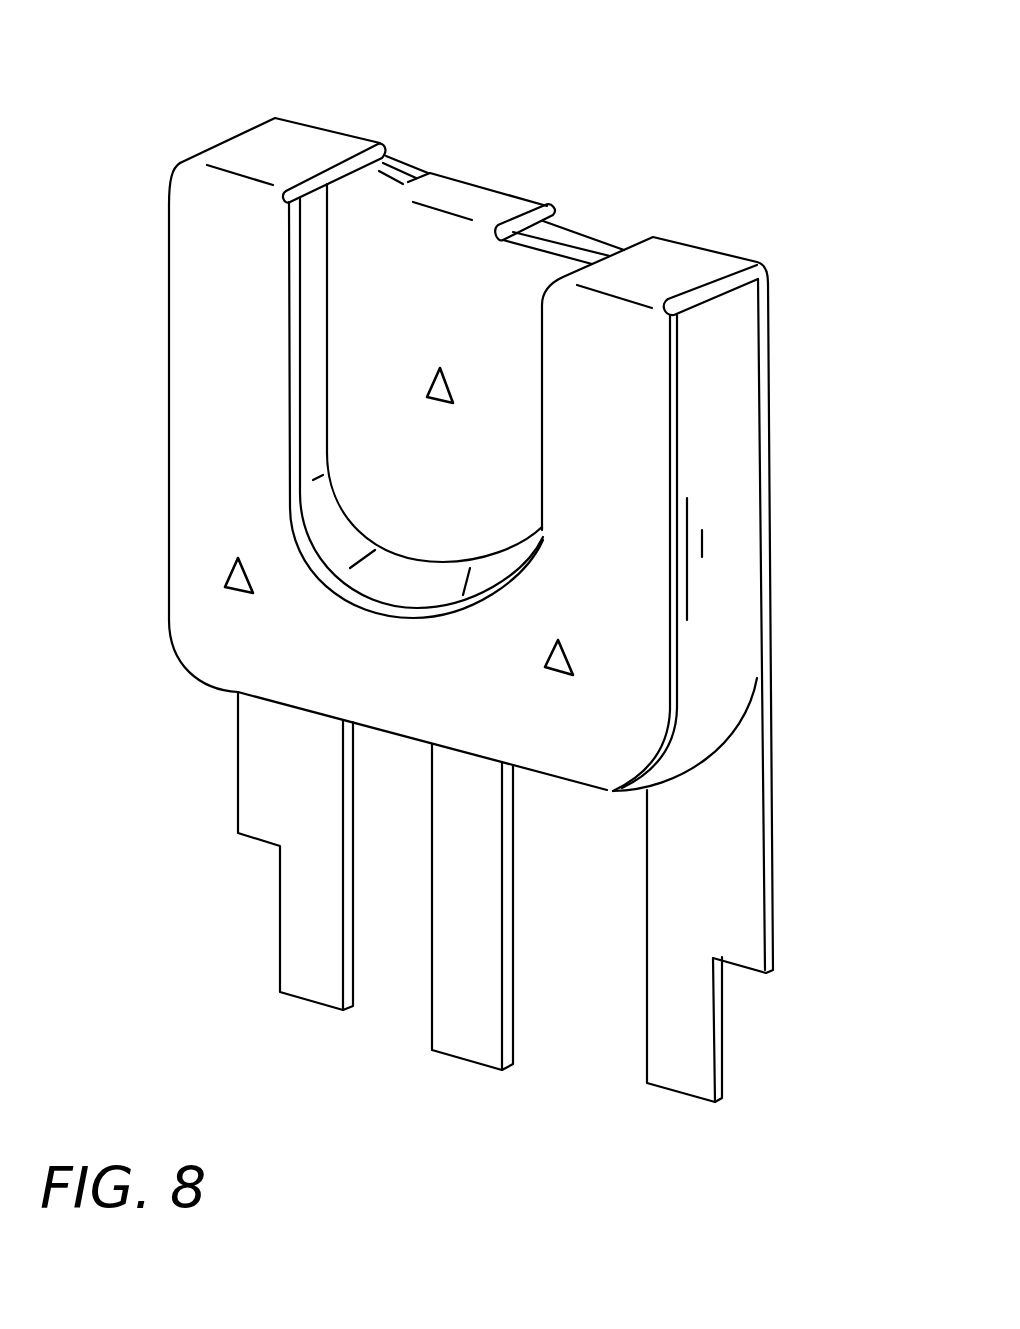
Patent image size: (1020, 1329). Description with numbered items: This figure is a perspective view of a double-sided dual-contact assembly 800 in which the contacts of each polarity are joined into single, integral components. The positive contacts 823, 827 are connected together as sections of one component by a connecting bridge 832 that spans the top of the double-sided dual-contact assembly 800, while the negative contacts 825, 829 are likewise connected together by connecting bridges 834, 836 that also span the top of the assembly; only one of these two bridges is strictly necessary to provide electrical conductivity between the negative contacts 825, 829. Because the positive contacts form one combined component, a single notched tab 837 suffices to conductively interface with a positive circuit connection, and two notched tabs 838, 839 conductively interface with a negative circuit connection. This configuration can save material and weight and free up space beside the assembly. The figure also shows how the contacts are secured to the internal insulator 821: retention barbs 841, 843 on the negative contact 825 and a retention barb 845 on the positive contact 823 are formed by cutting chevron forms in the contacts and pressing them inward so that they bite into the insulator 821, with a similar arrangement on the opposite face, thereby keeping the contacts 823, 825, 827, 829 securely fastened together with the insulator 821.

The double-sided dual-contact assembly 800 is at (759, 109).
The internal insulator 821 is at (727, 738).
The positive contact 823 is at (322, 303).
The negative contact 825 is at (168, 465).
The positive contact 827 is at (588, 228).
The negative contact 829 is at (773, 540).
The connecting bridge 832 is at (492, 190).
The connecting bridge 834 is at (235, 135).
The connecting bridge 836 is at (707, 247).
The notched tab 837 is at (432, 1027).
The notched tab 838 is at (280, 897).
The notched tab 839 is at (722, 1033).
The retention barb 841 is at (229, 575).
The retention barb 843 is at (570, 662).
The retention barb 845 is at (430, 387).